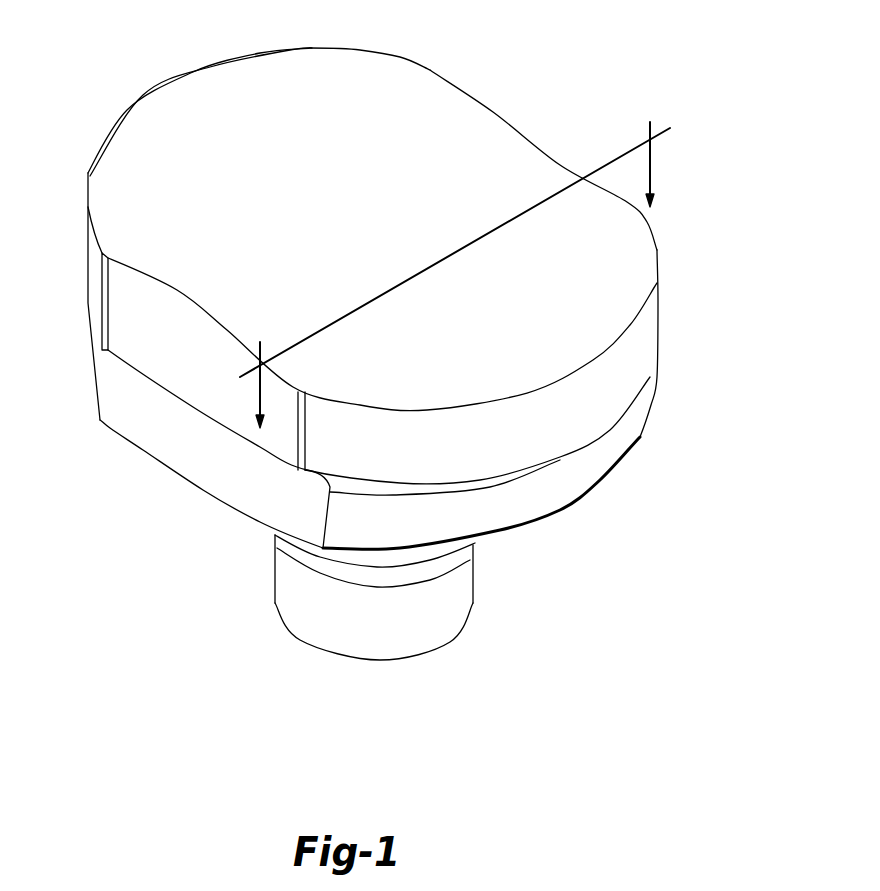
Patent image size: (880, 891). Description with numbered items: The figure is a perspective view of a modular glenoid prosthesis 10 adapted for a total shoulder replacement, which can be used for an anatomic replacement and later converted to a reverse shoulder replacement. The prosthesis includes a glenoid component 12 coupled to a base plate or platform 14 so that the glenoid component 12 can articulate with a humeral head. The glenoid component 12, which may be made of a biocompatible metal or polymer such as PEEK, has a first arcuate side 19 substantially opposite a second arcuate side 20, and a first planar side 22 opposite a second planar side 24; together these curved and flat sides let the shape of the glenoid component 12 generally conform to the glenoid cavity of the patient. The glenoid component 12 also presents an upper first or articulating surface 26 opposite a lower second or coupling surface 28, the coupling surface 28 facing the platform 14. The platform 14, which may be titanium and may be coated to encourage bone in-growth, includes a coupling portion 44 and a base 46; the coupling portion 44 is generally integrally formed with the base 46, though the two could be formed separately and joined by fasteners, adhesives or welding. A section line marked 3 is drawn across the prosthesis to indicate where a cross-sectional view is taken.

The modular glenoid prosthesis 10 is at (618, 90).
The glenoid component 12 is at (485, 110).
The platform 14 is at (443, 650).
The first arcuate side 19 is at (142, 103).
The second arcuate side 20 is at (638, 373).
The first planar side 22 is at (133, 320).
The second planar side 24 is at (527, 140).
The articulating surface 26 is at (358, 77).
The coupling surface 28 is at (310, 473).
The coupling portion 44 is at (640, 437).
The base 46 is at (478, 591).
The section line 3- 3 is at (452, 259).